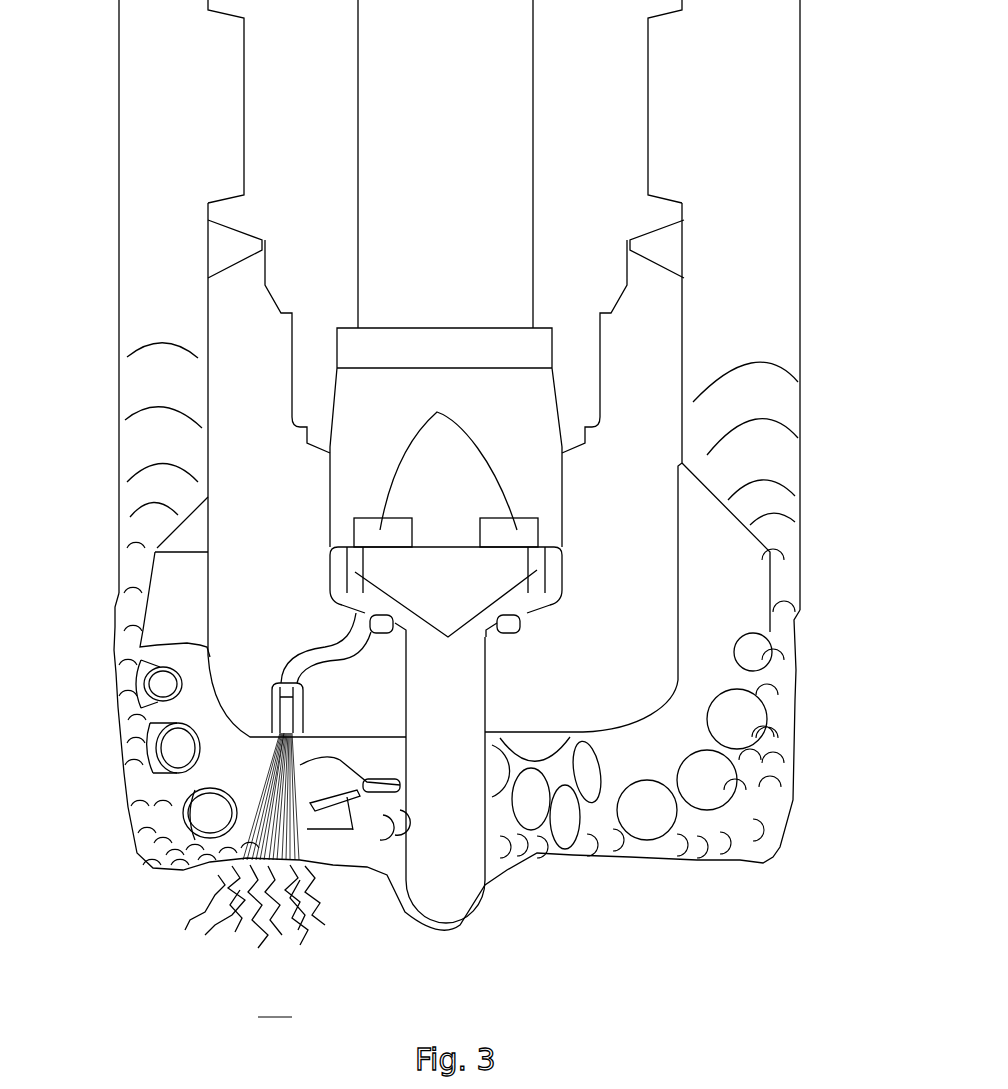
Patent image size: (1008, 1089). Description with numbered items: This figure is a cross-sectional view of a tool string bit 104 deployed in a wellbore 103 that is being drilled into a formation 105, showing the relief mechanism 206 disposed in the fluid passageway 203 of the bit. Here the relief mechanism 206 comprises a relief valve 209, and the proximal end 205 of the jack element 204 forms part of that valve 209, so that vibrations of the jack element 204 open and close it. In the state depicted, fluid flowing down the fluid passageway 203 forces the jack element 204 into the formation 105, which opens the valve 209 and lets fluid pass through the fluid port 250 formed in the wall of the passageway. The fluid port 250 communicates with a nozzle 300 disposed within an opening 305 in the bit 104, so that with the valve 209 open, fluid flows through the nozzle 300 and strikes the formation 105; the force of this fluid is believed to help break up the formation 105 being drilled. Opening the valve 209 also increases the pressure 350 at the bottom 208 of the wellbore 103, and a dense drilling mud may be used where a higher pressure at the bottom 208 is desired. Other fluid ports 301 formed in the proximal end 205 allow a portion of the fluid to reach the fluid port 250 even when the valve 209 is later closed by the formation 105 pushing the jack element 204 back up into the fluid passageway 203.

The wellbore 103 is at (747, 80).
The tool string bit 104 is at (162, 236).
The formation 105 is at (279, 1005).
The fluid passageway 203 is at (572, 382).
The jack element 204 is at (448, 705).
The proximal end 205 is at (446, 568).
The relief mechanism 206 is at (302, 546).
The bottom of the wellbore 208 is at (543, 880).
The relief valve 209 is at (562, 548).
The fluid port 250 is at (446, 437).
The nozzle 300 is at (302, 665).
The other fluid ports 301 is at (446, 619).
The opening 305 is at (257, 737).
The pressure 350 is at (767, 858).